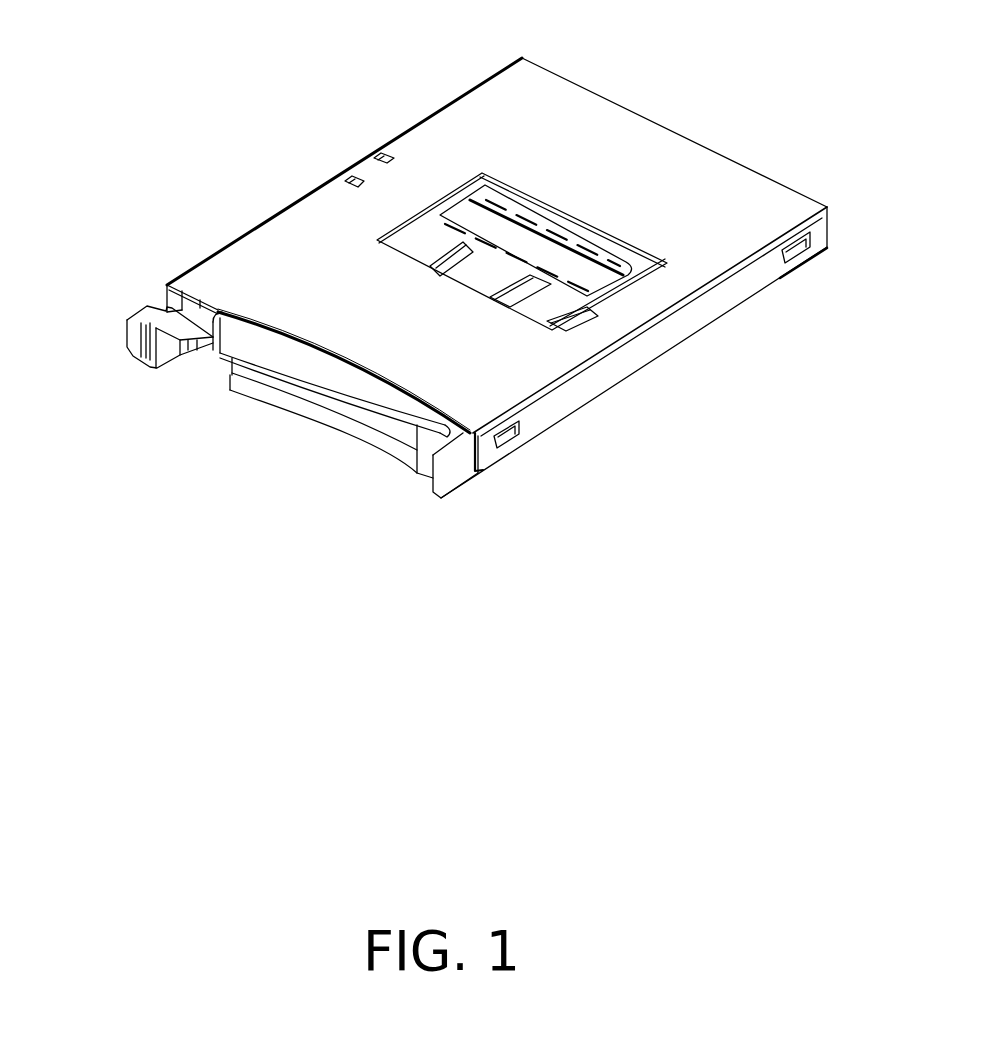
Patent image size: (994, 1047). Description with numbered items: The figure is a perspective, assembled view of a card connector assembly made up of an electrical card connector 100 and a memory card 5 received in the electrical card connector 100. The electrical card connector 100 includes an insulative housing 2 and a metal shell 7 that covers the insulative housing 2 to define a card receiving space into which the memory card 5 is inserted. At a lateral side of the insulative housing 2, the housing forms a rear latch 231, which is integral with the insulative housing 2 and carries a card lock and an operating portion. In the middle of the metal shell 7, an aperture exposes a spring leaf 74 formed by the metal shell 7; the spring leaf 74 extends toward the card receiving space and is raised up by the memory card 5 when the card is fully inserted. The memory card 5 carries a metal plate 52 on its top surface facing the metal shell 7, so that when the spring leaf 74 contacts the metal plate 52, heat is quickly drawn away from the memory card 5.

The electrical card connector 100 is at (273, 188).
The metal shell 7 is at (505, 123).
The spring leaf 74 is at (465, 217).
The metal plate 52 is at (575, 242).
The memory card 5 is at (352, 378).
The insulative housing 2 is at (463, 465).
The rear latch 231 is at (178, 322).